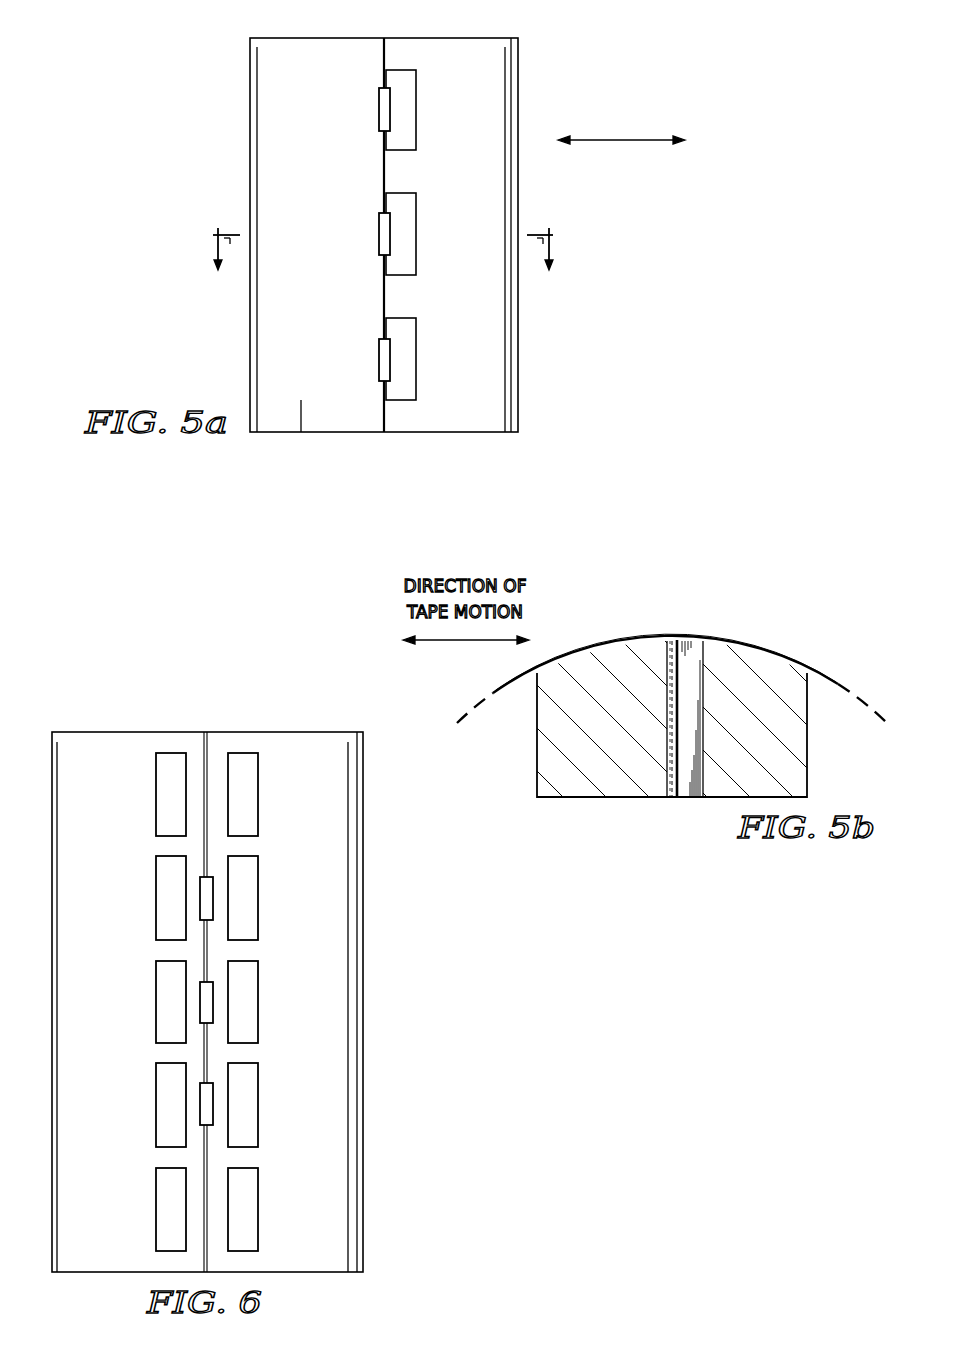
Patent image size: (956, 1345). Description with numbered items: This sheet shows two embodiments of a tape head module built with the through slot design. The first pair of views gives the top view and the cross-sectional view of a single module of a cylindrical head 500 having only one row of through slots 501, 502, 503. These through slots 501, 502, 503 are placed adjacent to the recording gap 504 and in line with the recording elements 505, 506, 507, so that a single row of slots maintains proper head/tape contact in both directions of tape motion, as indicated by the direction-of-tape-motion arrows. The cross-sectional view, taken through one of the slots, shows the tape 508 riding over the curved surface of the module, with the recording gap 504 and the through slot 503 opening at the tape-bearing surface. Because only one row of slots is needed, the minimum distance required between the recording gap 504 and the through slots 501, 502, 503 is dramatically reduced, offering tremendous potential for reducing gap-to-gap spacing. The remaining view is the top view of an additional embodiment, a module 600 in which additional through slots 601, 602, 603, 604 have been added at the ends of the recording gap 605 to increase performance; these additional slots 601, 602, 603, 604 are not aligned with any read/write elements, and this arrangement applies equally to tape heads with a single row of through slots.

In FIG. 5a, the tape head module 500 is at (562, 378).
In FIG. 5b, the tape head module 500 is at (796, 584).
In FIG. 5a, the through slot 501 is at (418, 107).
In FIG. 5a, the through slot 502 is at (418, 229).
In FIG. 5a, the through slot 503 is at (418, 370).
In FIG. 5b, the through slot 503 is at (691, 648).
In FIG. 5a, the recording gap 504 is at (383, 52).
In FIG. 5b, the recording gap 504 is at (658, 648).
In FIG. 5a, the recording element 505 is at (378, 108).
In FIG. 5a, the recording element 506 is at (378, 233).
In FIG. 5a, the recording element 507 is at (378, 379).
In FIG. 5b, the magnetic tape 508 is at (826, 681).
In FIG. 6, the tape head module 600 is at (88, 694).
In FIG. 6, the additional through slot 601 is at (158, 795).
In FIG. 6, the additional through slot 602 is at (157, 1208).
In FIG. 6, the additional through slot 603 is at (253, 795).
In FIG. 6, the additional through slot 604 is at (252, 1210).
In FIG. 6, the recording gap 605 is at (204, 743).